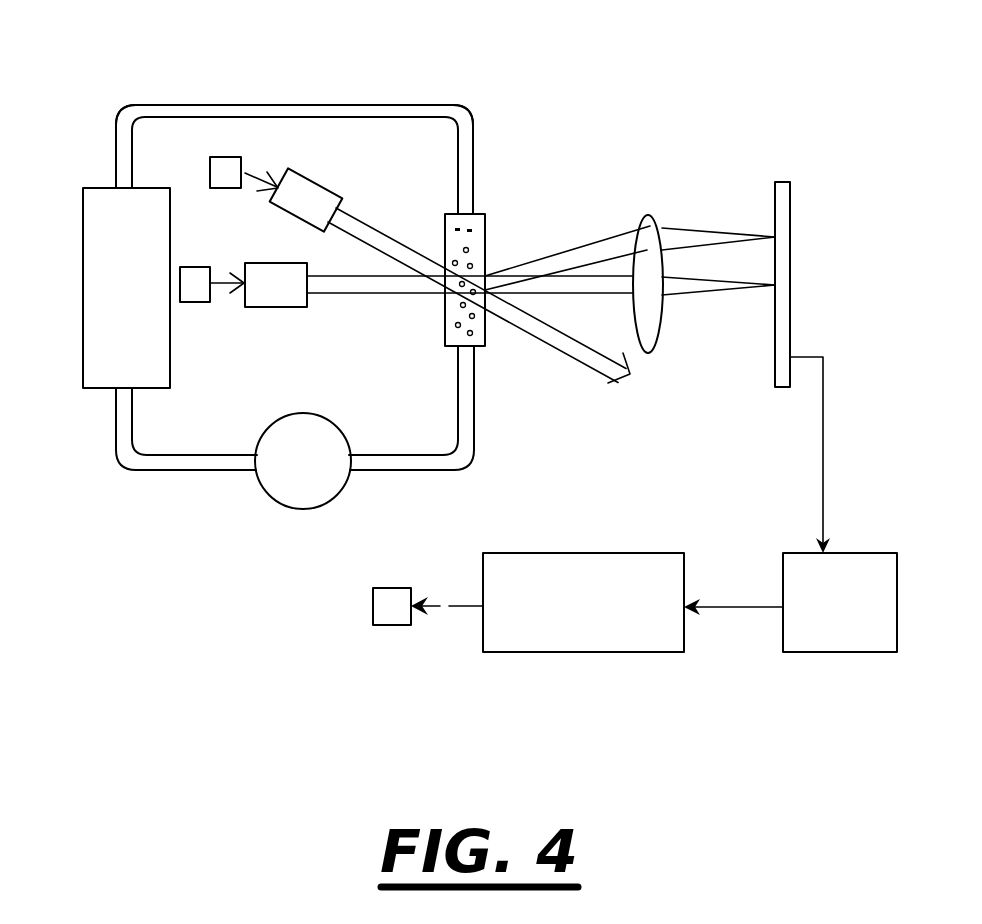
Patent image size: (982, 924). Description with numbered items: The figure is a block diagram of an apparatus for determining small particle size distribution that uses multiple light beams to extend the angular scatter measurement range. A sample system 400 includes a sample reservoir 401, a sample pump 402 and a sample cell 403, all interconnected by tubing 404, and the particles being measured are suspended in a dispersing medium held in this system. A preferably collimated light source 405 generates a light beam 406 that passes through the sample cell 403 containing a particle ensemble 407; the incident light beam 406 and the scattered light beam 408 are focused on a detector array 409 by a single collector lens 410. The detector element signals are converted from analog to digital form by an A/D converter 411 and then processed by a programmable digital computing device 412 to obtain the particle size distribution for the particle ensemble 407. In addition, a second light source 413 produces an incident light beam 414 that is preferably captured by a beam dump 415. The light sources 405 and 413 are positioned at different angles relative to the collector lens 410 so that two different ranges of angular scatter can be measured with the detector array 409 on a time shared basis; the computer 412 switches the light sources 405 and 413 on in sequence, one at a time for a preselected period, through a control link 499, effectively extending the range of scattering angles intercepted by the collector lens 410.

The sample system 400 is at (242, 104).
The sample reservoir 401 is at (88, 187).
The sample pump 402 is at (336, 496).
The sample cell 403 is at (488, 340).
The tubing 404 is at (387, 105).
The light source 405 is at (275, 307).
The light beam 406 is at (393, 295).
The particle ensemble 407 is at (468, 249).
The scattered light beam 408 is at (585, 245).
The detector array 409 is at (792, 201).
The collector lens 410 is at (655, 216).
The A/D converter 411 is at (825, 652).
The programmable digital computing device 412 is at (580, 652).
The second light source 413 is at (334, 180).
The incident light beam 414 is at (372, 214).
The beam dump 415 is at (620, 381).
The control link 499 is at (248, 174).